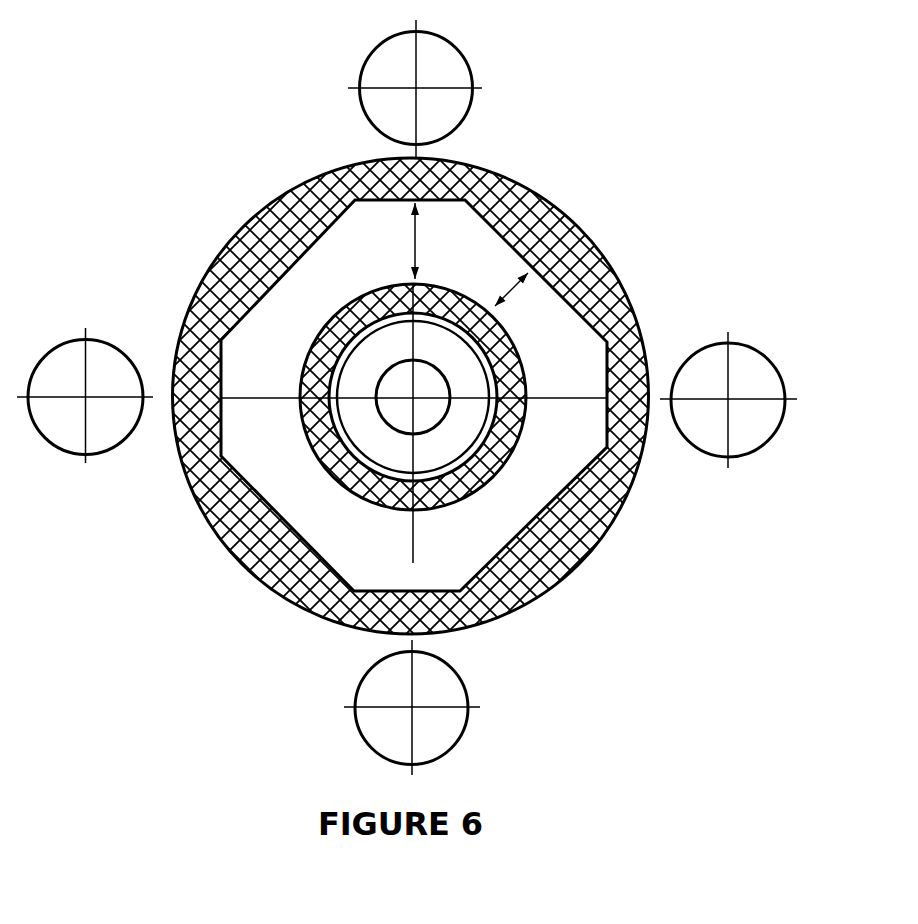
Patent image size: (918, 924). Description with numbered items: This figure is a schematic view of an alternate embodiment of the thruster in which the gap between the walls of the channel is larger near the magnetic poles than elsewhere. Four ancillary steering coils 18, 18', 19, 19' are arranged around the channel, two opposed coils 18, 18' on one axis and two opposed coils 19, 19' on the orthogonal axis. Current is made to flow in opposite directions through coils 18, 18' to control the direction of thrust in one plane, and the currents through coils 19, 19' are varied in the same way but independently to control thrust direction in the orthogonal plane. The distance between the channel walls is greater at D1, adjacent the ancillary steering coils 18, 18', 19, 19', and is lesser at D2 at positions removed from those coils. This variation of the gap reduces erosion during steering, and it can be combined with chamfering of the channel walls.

The ancillary steering coil 18 is at (437, 89).
The ancillary steering coil 18' is at (438, 707).
The ancillary steering coil 19 is at (85, 375).
The ancillary steering coil 19' is at (744, 400).
The greater channel wall distance D1 is at (416, 232).
The lesser channel wall distance D2 is at (537, 278).